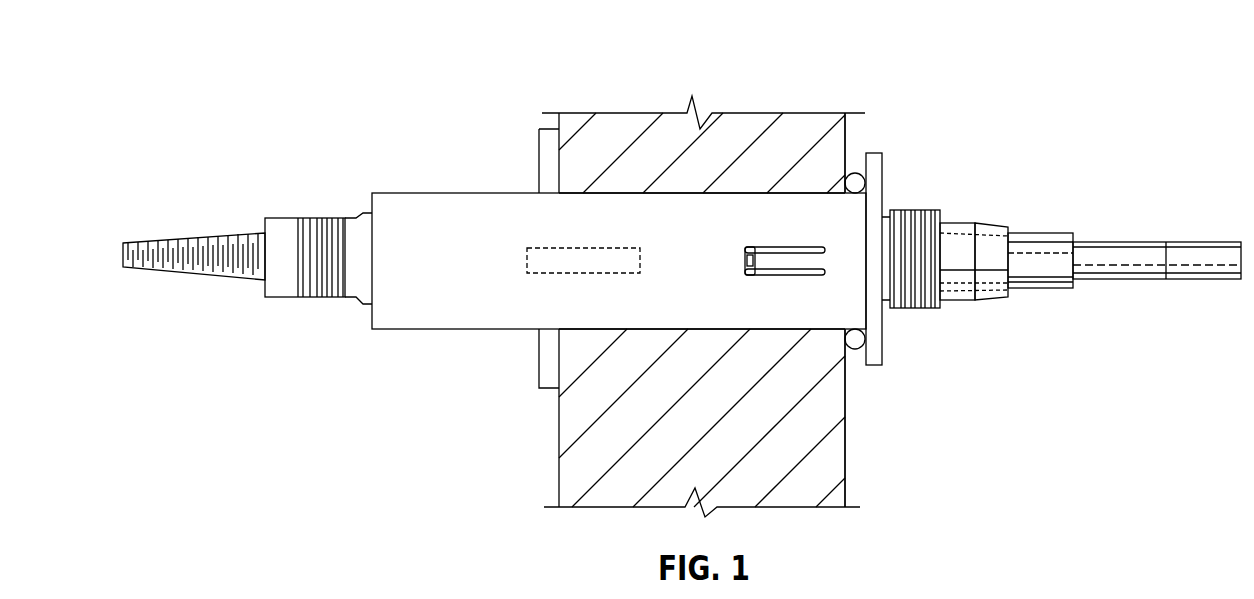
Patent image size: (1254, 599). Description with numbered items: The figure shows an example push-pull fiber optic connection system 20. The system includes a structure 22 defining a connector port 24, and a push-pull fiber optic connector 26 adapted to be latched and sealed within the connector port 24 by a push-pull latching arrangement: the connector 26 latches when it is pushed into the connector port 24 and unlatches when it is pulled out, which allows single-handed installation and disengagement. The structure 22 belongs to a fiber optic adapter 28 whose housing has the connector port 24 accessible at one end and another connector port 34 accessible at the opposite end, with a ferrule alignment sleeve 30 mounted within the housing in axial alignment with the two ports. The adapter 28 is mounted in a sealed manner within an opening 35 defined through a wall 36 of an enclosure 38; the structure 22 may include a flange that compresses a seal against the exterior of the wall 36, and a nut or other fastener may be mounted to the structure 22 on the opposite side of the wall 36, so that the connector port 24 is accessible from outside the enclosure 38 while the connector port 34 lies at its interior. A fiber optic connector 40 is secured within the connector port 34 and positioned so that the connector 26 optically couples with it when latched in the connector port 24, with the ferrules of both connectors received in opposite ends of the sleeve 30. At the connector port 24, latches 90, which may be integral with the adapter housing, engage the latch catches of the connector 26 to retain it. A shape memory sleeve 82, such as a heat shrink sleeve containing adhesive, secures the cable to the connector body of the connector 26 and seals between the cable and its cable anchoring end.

The push-pull fiber optic connection system 20 is at (856, 86).
The structure 22 is at (469, 176).
The connector port 24 is at (884, 216).
The push-pull fiber optic connector 26 is at (963, 222).
The fiber optic adapter 28 is at (1123, 281).
The ferrule alignment sleeve 30 is at (634, 250).
The connector port 34 is at (371, 195).
The opening 35 is at (647, 330).
The wall 36 is at (847, 448).
The enclosure 38 is at (856, 388).
The fiber optic connector 40 is at (297, 296).
The shape memory sleeve 82 is at (1042, 284).
The latches 90 is at (767, 277).